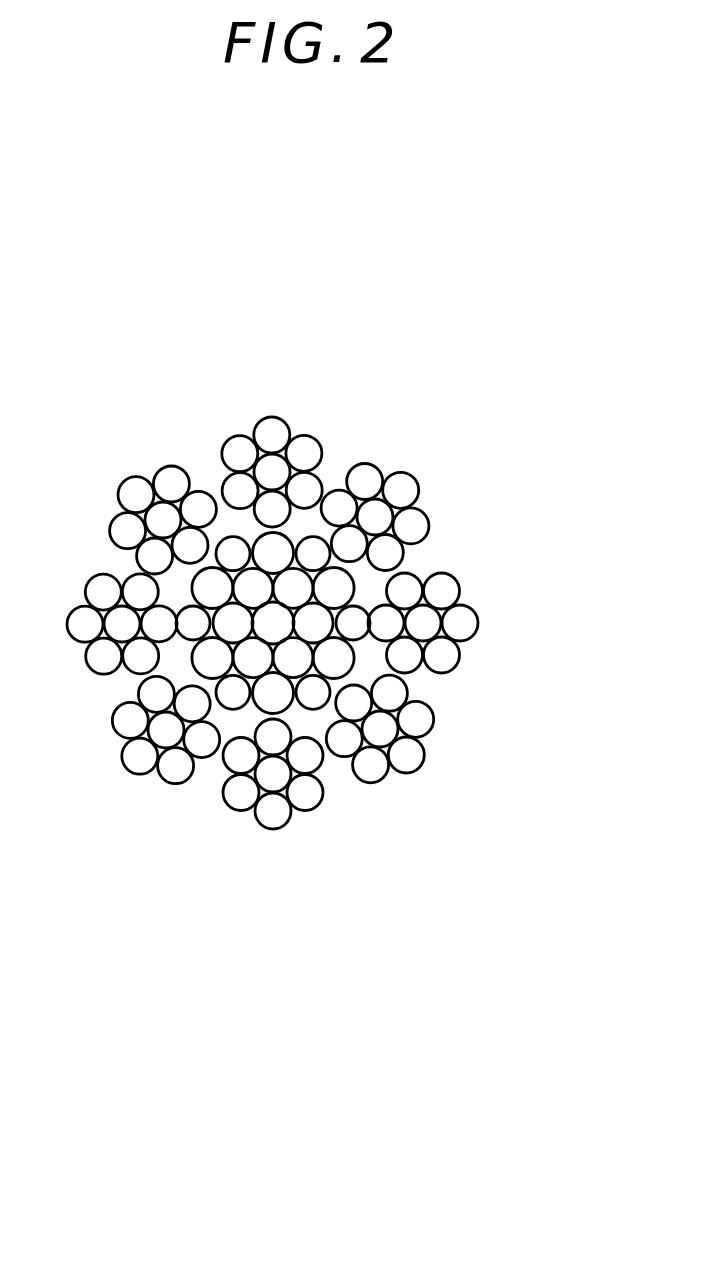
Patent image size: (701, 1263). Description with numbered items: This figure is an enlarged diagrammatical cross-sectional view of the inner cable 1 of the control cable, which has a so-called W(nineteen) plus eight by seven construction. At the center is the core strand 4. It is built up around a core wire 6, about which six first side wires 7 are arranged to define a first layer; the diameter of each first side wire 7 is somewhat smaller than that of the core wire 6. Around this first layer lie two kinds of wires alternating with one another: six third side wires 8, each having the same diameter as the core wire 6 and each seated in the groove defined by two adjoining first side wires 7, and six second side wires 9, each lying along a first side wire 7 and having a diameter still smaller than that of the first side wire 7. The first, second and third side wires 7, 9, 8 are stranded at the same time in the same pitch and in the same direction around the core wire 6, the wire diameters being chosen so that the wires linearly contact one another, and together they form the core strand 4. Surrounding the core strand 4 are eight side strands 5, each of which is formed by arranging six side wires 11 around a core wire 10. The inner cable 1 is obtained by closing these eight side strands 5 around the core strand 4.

The inner cable 1 is at (277, 1037).
The core strand 4 is at (350, 368).
The side strand 5 is at (347, 866).
The core wire 6 is at (267, 628).
The first side wire 7 is at (250, 585).
The third side wire 8 is at (275, 553).
The second side wire 9 is at (313, 553).
The core wire 10 is at (273, 780).
The side wire 11 is at (240, 795).